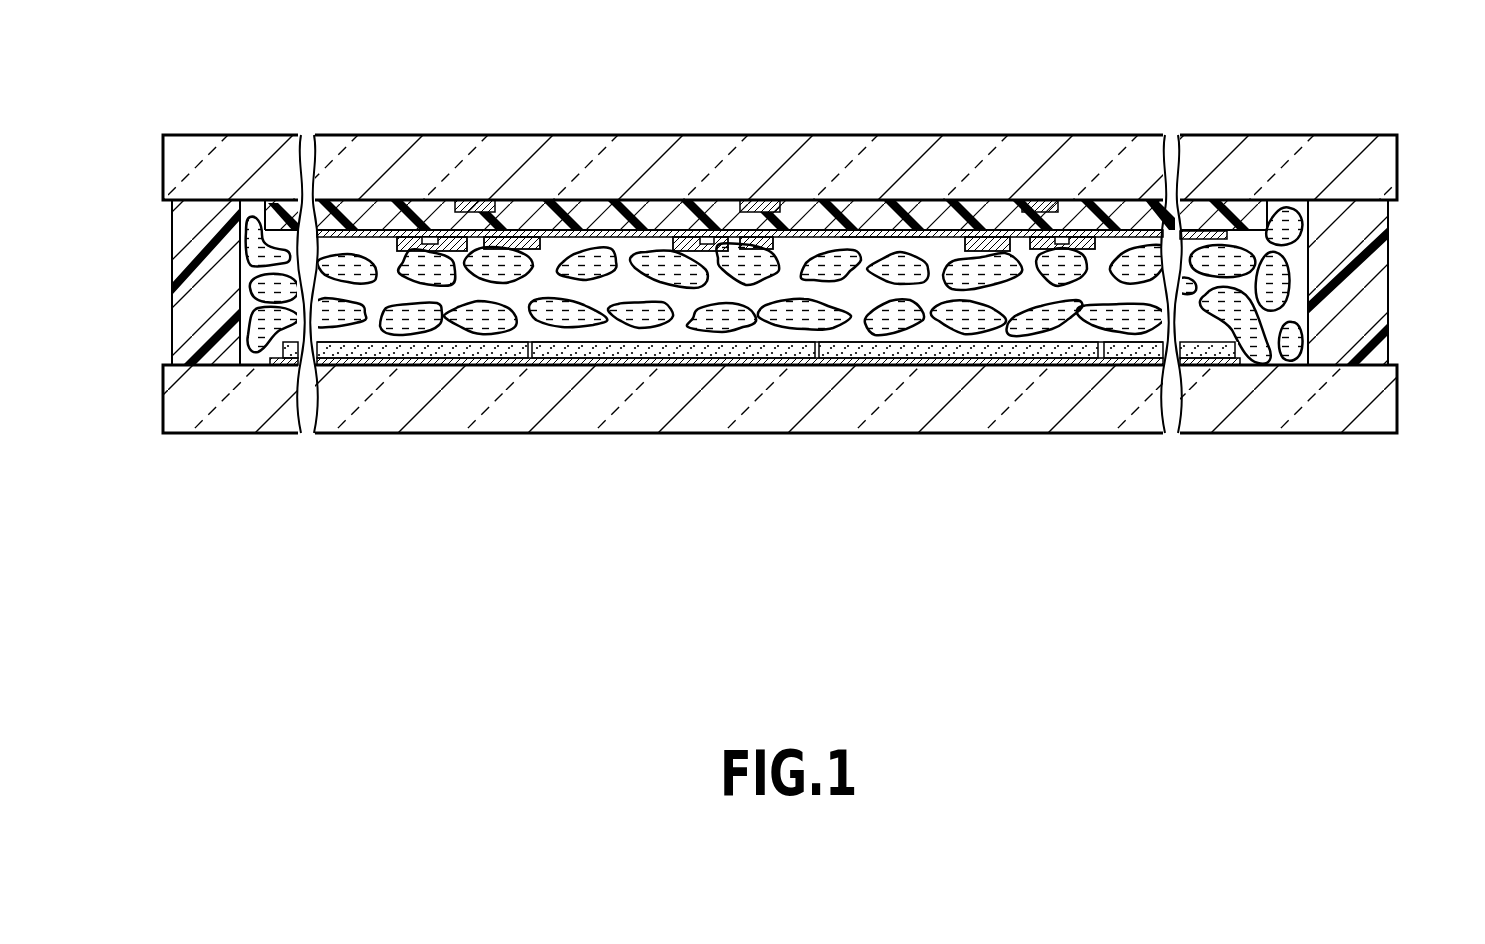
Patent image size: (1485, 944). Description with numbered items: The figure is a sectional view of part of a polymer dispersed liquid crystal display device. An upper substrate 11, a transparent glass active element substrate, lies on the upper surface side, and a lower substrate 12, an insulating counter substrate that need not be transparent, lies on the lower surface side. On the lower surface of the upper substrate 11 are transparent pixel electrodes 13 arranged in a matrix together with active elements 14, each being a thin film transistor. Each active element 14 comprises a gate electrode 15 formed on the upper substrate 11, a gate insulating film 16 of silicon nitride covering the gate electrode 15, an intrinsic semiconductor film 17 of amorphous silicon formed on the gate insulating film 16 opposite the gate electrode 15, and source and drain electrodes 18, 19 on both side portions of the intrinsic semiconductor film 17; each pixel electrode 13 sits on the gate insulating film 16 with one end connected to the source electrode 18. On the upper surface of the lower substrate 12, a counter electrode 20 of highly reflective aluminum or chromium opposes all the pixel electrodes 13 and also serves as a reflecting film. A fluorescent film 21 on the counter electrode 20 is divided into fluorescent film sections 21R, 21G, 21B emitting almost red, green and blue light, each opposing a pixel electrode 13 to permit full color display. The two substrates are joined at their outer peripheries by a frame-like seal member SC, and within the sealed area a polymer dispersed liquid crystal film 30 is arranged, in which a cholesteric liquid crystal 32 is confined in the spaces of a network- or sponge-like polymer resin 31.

The upper substrate 11 is at (1137, 152).
The lower substrate 12 is at (1137, 402).
The pixel electrode 13 is at (372, 228).
The active element 14 is at (480, 202).
The gate electrode 15 is at (808, 232).
The gate insulating film 16 is at (948, 232).
The intrinsic semiconductor film 17 is at (732, 232).
The source electrode 18 is at (700, 232).
The drain electrode 19 is at (877, 232).
The counter electrode 20 is at (1019, 366).
The fluorescent film 21 is at (759, 515).
The fluorescent film section 21R is at (440, 352).
The fluorescent film section 21G is at (603, 352).
The fluorescent film section 21B is at (940, 352).
The polymer dispersed liquid crystal film 30 is at (774, 261).
The polymer resin 31 is at (714, 335).
The cholesteric liquid crystal 32 is at (745, 313).
The seal member SC is at (1348, 289).